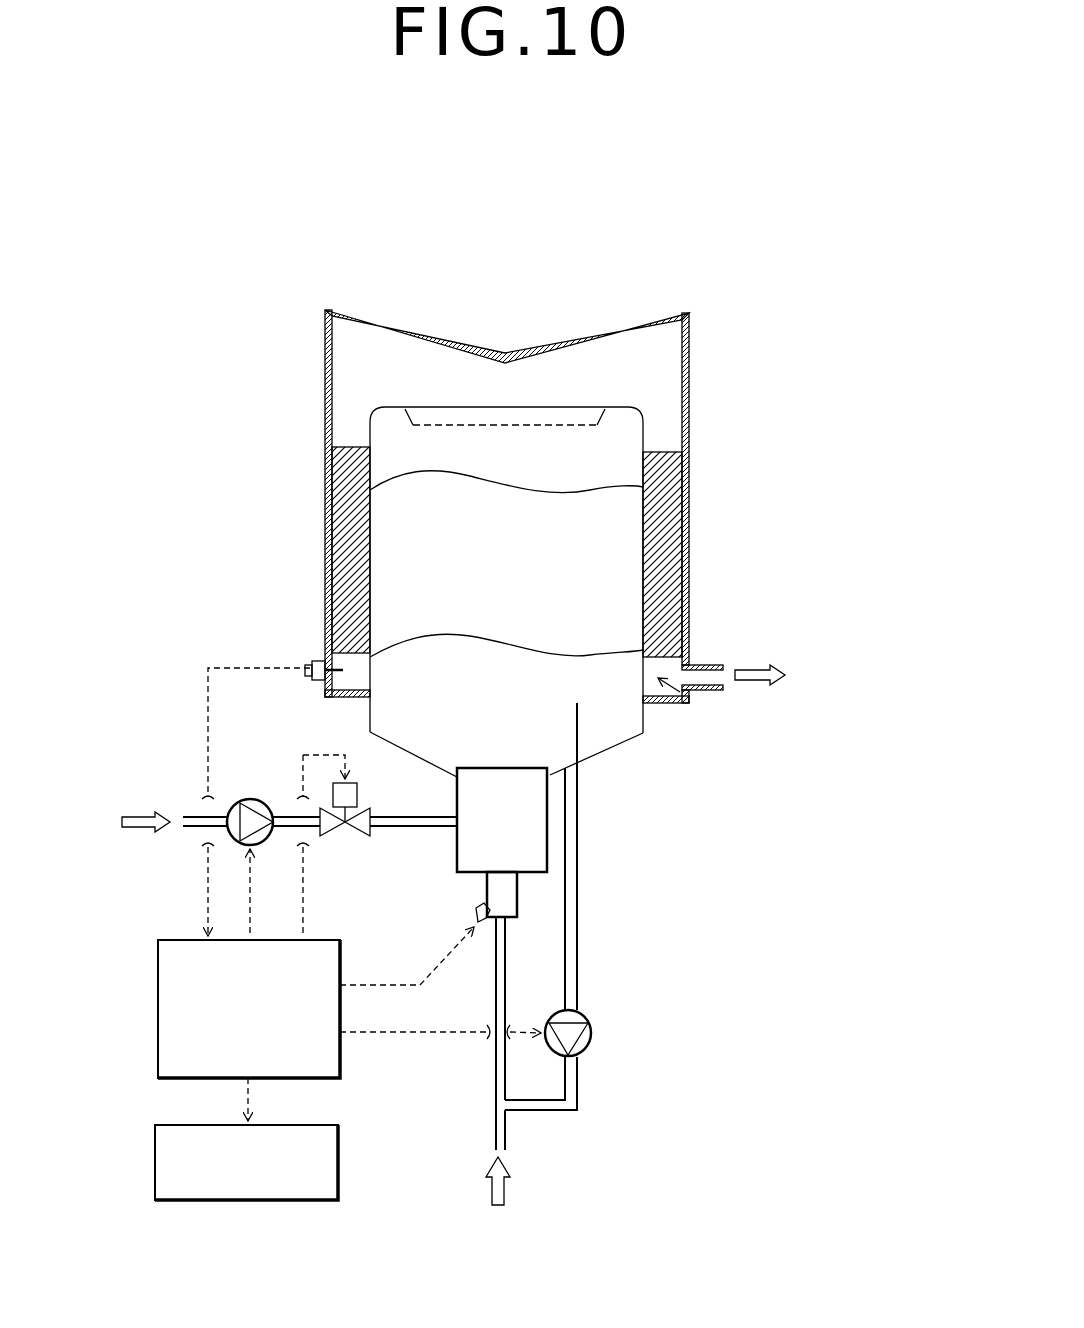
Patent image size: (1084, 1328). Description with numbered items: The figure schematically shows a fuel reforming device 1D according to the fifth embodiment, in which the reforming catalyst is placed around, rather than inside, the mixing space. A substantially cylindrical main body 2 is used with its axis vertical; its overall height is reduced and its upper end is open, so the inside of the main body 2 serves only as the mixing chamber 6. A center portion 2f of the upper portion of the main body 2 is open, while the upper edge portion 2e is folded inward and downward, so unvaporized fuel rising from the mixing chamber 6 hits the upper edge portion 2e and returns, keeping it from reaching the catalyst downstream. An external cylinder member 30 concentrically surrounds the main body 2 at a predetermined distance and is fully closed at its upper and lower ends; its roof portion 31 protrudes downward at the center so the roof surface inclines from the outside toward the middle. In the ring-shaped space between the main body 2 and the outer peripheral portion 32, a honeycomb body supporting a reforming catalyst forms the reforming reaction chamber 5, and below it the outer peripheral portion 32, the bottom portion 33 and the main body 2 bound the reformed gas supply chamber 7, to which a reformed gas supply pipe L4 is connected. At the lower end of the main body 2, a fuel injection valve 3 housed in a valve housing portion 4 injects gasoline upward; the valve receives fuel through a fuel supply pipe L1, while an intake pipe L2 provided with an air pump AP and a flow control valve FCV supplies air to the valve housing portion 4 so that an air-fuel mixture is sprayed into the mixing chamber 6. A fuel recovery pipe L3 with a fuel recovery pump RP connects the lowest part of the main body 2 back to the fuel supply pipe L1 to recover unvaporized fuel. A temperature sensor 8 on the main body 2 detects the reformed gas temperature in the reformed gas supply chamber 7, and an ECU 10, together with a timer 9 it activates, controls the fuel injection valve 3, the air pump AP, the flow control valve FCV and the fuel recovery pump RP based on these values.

The fuel reforming device 1D is at (230, 214).
The external cylinder member 30 is at (322, 366).
The roof portion 31 is at (545, 345).
The outer peripheral portion 32 is at (690, 465).
The bottom portion 33 is at (655, 705).
The reformed gas supply pipe L4 is at (710, 665).
The reformed gas supply chamber 7 is at (682, 695).
The reforming reaction chamber 5 is at (322, 489).
The main body 2 is at (372, 545).
The upper edge portion 2e is at (513, 428).
The center portion 2f is at (512, 403).
The mixing chamber 6 is at (519, 585).
The temperature sensor 8 is at (319, 657).
The valve housing portion 4 is at (472, 806).
The fuel injection valve 3 is at (492, 893).
The intake pipe L2 is at (390, 832).
The air pump AP is at (250, 798).
The flow control valve FCV is at (334, 836).
The fuel supply pipe L1 is at (496, 1120).
The fuel recovery pipe L3 is at (577, 913).
The fuel recovery pump RP is at (592, 1033).
The ECU 10 is at (157, 1000).
The timer 9 is at (155, 1165).